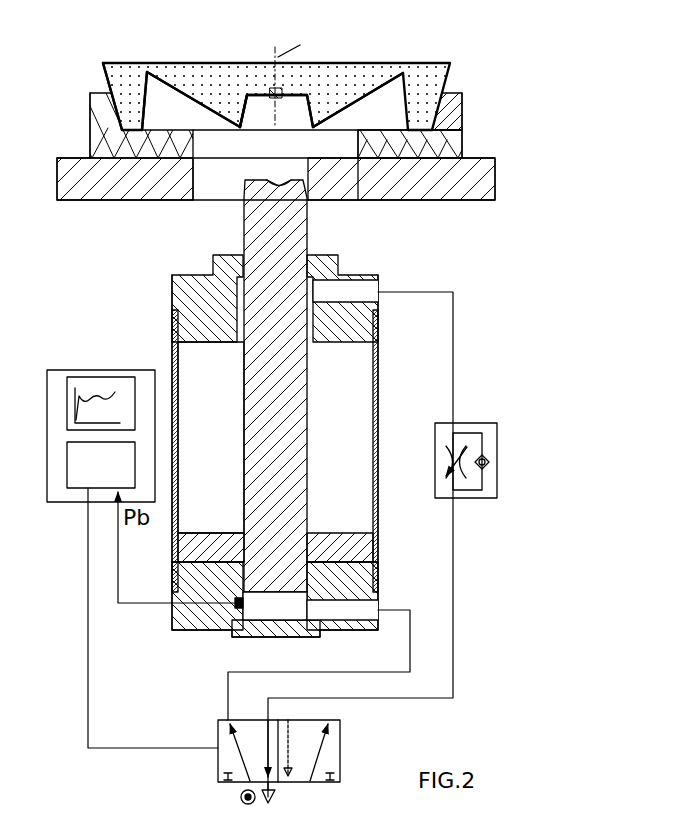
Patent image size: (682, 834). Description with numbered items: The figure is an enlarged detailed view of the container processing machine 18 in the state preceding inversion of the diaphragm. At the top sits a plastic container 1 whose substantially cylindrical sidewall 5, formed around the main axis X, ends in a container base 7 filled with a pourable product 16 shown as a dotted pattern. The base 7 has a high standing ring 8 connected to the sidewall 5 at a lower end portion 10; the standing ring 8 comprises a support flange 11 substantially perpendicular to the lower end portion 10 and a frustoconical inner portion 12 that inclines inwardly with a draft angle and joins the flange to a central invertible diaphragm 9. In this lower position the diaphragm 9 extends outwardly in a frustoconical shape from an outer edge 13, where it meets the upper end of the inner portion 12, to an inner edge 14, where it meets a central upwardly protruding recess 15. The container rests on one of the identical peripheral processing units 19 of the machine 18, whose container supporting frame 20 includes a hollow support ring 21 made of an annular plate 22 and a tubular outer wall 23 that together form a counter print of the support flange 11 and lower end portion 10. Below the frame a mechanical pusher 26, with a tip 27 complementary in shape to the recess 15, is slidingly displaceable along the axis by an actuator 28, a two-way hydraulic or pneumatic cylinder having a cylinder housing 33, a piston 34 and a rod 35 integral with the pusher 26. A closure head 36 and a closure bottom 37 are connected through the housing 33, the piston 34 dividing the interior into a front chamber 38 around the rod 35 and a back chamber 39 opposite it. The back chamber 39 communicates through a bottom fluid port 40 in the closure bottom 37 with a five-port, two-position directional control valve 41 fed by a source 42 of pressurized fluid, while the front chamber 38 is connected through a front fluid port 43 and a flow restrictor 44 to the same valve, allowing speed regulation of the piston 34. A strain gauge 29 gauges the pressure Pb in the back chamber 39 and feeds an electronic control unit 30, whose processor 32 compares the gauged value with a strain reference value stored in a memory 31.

The container 1 is at (282, 96).
The sidewall 5 is at (107, 72).
The container base 7 is at (225, 131).
The standing ring 8 is at (153, 92).
The invertible diaphragm 9 is at (355, 100).
The lower end portion 10 is at (117, 110).
The support flange 11 is at (130, 132).
The inner portion 12 is at (146, 113).
The outer edge 13 is at (147, 72).
The inner edge 14 is at (237, 128).
The central recess 15 is at (276, 107).
The pourable product 16 is at (338, 75).
The container processing machine 18 is at (225, 456).
The processing unit 19 is at (300, 456).
The container supporting frame 20 is at (441, 201).
The support ring 21 is at (464, 127).
The annular plate 22 is at (380, 150).
The tubular outer wall 23 is at (452, 110).
The mechanical pusher 26 is at (292, 192).
The tip 27 is at (283, 181).
The actuator 28 is at (245, 293).
The strain gauge 29 is at (237, 609).
The electronic control unit 30 is at (114, 535).
The memory 31 is at (67, 405).
The processor 32 is at (67, 465).
The cylinder housing 33 is at (379, 379).
The piston 34 is at (355, 550).
The rod 35 is at (297, 364).
The closure head 36 is at (207, 293).
The closure bottom 37 is at (333, 631).
The front chamber 38 is at (218, 432).
The back chamber 39 is at (273, 598).
The bottom fluid port 40 is at (380, 605).
The directional control valve 41 is at (343, 738).
The source of fluid under pressure 42 is at (240, 800).
The front fluid port 43 is at (380, 290).
The flow restrictor 44 is at (471, 421).